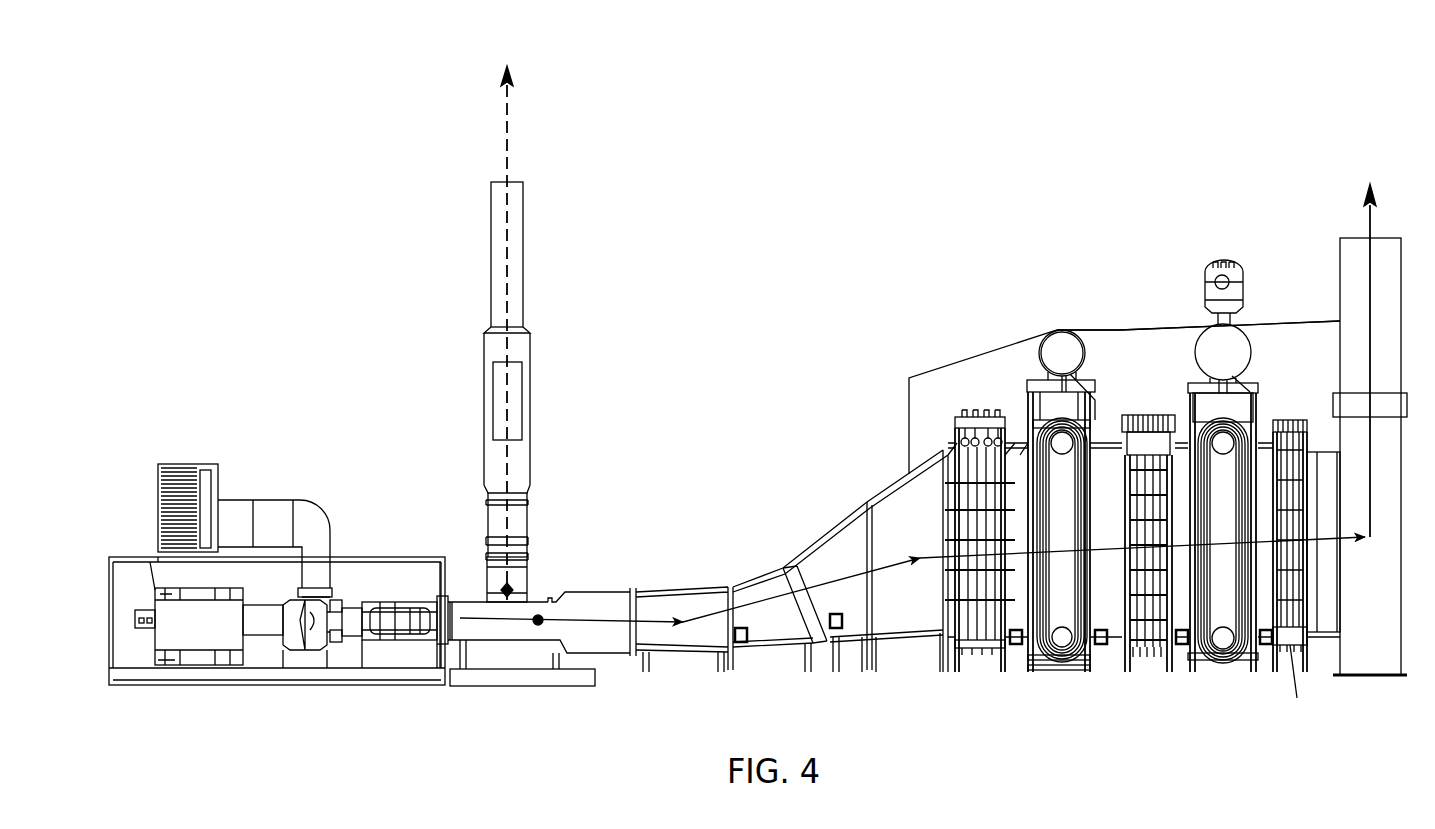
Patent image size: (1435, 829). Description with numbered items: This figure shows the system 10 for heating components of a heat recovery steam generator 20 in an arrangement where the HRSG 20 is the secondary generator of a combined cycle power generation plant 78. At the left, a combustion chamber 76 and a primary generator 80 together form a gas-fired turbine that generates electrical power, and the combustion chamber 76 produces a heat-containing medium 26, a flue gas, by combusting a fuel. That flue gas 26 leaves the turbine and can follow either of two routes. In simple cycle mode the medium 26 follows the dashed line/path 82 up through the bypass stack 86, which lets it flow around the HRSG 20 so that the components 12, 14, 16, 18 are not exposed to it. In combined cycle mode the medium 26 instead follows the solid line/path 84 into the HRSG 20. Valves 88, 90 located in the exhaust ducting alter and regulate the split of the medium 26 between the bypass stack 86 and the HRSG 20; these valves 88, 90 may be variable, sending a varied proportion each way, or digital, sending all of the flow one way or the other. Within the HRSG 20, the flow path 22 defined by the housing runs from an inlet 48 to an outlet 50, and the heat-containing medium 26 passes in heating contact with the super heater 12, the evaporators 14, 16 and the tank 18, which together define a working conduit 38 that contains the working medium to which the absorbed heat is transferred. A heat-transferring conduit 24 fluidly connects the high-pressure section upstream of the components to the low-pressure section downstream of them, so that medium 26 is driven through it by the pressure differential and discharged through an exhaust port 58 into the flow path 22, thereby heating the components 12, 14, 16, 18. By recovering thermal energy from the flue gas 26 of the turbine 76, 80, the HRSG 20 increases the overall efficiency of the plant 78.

The combined cycle power generation plant 78 is at (322, 122).
The primary generator 80 is at (360, 494).
The combustion chamber 76 is at (383, 598).
The heat-containing medium 26 is at (450, 600).
The valve 90 is at (538, 626).
The valve 88 is at (515, 590).
The bypass stack 86 is at (524, 266).
The dashed line/path 82 is at (513, 146).
The solid line/path 84 is at (835, 573).
The inlet 48 is at (660, 592).
The flow path 22 is at (893, 638).
The system 10 is at (983, 236).
The heat recovery steam generator 20 is at (880, 325).
The working conduit 38 is at (1158, 365).
The super heater 12 is at (972, 650).
The evaporator 14 is at (1068, 648).
The tank 18 is at (1082, 340).
The heat-transferring conduit 24 is at (1117, 331).
The evaporator 16 is at (1228, 648).
The outlet 50 is at (1385, 238).
The exhaust port 58 is at (1338, 322).